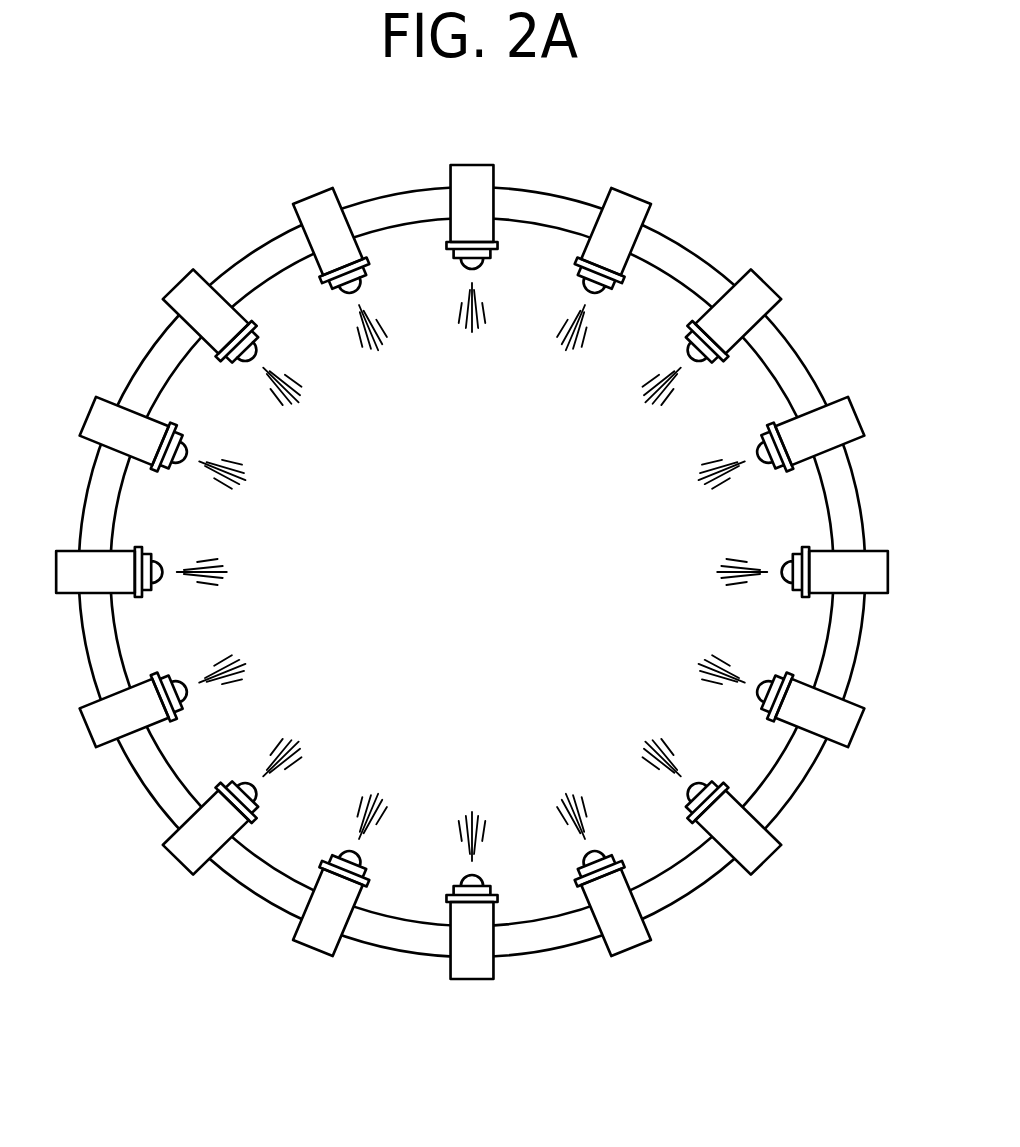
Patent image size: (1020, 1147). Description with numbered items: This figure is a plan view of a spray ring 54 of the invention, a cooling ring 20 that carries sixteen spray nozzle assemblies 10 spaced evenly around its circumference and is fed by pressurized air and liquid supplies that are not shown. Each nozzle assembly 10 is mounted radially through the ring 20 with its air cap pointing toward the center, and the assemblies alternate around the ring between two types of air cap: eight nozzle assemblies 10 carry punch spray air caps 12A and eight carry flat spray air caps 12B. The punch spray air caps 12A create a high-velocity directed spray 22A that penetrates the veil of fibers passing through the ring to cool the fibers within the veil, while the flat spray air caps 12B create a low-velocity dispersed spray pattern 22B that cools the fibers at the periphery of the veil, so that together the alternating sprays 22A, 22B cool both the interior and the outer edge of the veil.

The spray nozzle assembly 10 is at (318, 205).
The punch spray air cap 12A is at (362, 282).
The flat spray air cap 12B is at (260, 355).
The cooling ring 20 is at (252, 267).
The high-velocity directed spray 22A is at (432, 462).
The low-velocity dispersed spray pattern 22B is at (267, 413).
The spray ring 54 is at (742, 233).